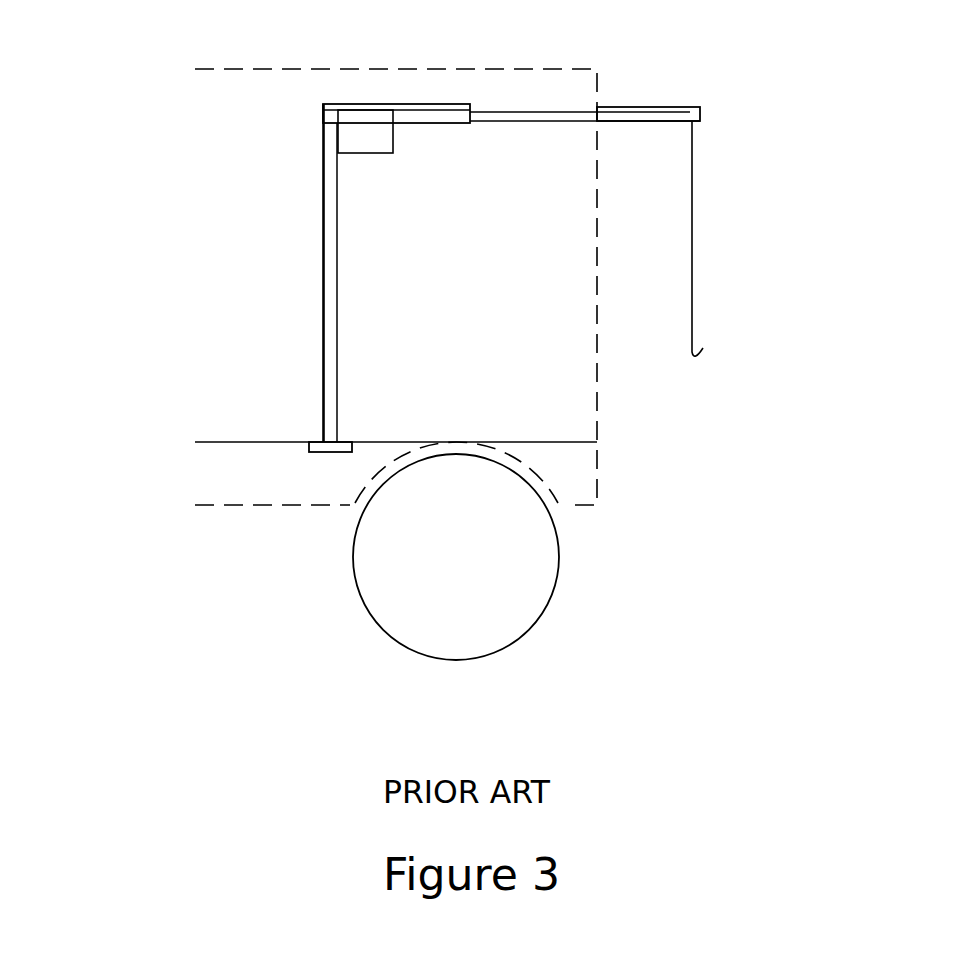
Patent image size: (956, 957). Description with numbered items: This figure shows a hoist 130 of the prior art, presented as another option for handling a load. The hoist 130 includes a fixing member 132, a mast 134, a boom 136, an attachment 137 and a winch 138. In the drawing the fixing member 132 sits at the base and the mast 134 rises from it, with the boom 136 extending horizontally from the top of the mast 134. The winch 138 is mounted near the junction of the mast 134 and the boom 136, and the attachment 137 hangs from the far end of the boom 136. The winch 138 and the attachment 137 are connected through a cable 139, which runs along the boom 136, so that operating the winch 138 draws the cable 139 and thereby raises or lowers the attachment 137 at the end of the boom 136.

The hoist 130 is at (138, 68).
The fixing member 132 is at (309, 441).
The mast 134 is at (337, 290).
The boom 136 is at (450, 103).
The attachment 137 is at (704, 349).
The winch 138 is at (393, 153).
The cable 139 is at (660, 107).